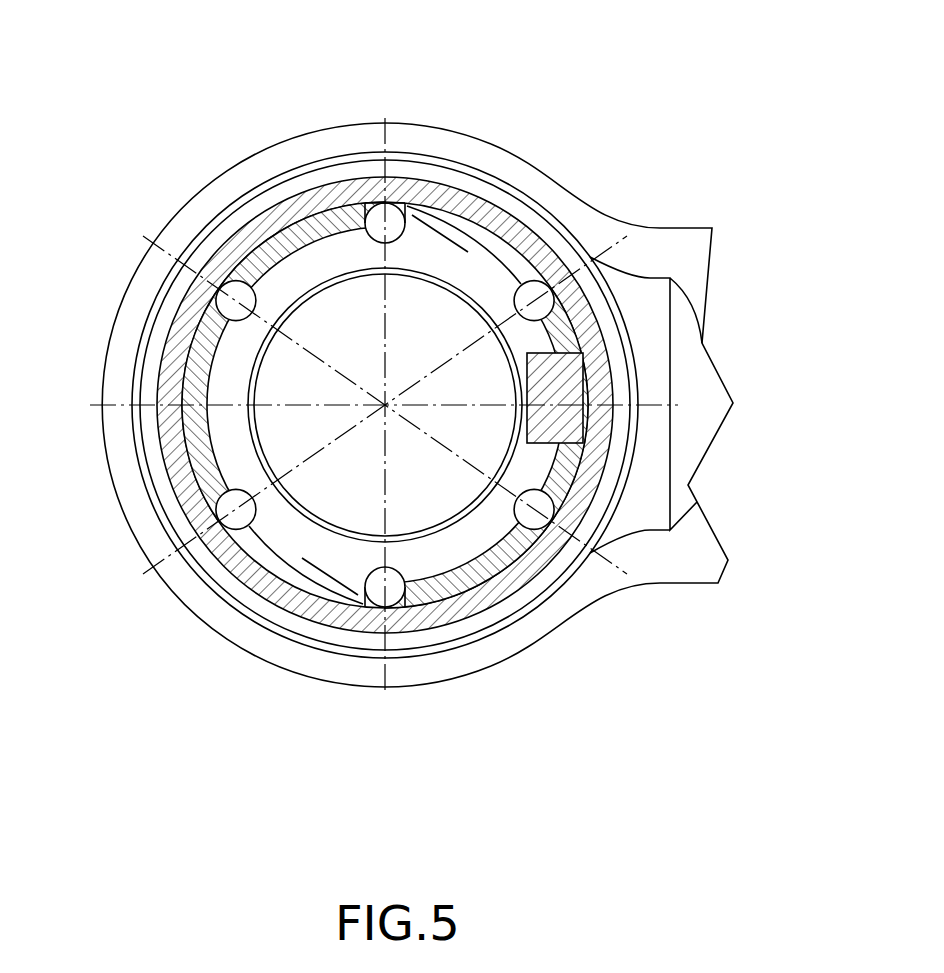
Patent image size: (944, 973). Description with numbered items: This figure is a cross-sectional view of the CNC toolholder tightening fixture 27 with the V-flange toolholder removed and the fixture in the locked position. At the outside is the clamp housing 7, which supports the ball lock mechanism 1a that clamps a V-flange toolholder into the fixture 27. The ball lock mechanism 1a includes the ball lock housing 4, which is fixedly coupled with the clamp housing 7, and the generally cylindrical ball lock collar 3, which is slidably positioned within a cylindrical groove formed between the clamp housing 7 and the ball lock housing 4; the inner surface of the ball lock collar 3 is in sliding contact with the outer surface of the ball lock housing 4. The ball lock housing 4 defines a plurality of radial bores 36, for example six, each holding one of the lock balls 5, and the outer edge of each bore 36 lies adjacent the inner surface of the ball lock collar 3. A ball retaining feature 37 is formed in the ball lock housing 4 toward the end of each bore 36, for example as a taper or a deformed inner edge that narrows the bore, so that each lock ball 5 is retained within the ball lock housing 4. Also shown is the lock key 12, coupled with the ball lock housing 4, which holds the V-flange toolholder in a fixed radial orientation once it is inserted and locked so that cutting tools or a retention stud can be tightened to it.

The toolholder tightening fixture 27 is at (130, 67).
The clamp housing 7 is at (265, 640).
The ball lock mechanism 1a is at (288, 197).
The ball lock collar 3 is at (503, 220).
The ball lock housing 4 is at (477, 570).
The lock balls 5 is at (225, 285).
The radial bores 36 is at (397, 214).
The ball retaining feature 37 is at (377, 215).
The lock key 12 is at (578, 380).